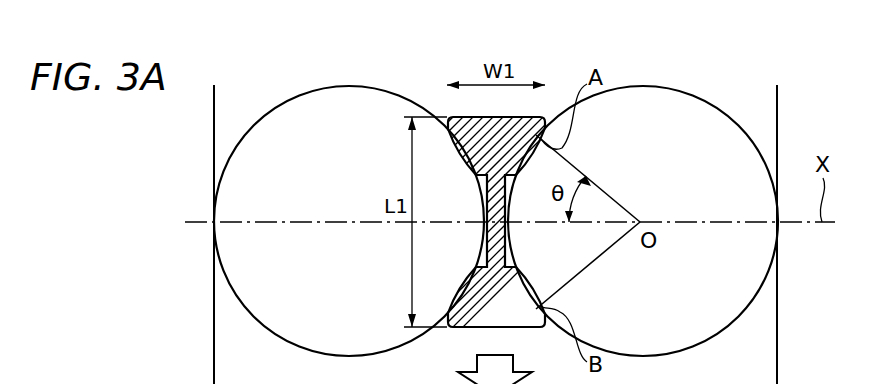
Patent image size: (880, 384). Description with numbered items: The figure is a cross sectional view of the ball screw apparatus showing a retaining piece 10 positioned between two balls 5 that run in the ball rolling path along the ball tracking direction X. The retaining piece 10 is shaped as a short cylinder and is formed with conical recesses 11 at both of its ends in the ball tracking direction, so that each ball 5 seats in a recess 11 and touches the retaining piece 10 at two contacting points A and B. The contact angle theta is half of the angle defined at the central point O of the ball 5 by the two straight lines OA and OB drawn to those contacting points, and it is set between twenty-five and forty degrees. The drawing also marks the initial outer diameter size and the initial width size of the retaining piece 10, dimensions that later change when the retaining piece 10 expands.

The ball 5 is at (350, 96).
The retaining piece 10 is at (460, 193).
The recess 11 is at (467, 290).